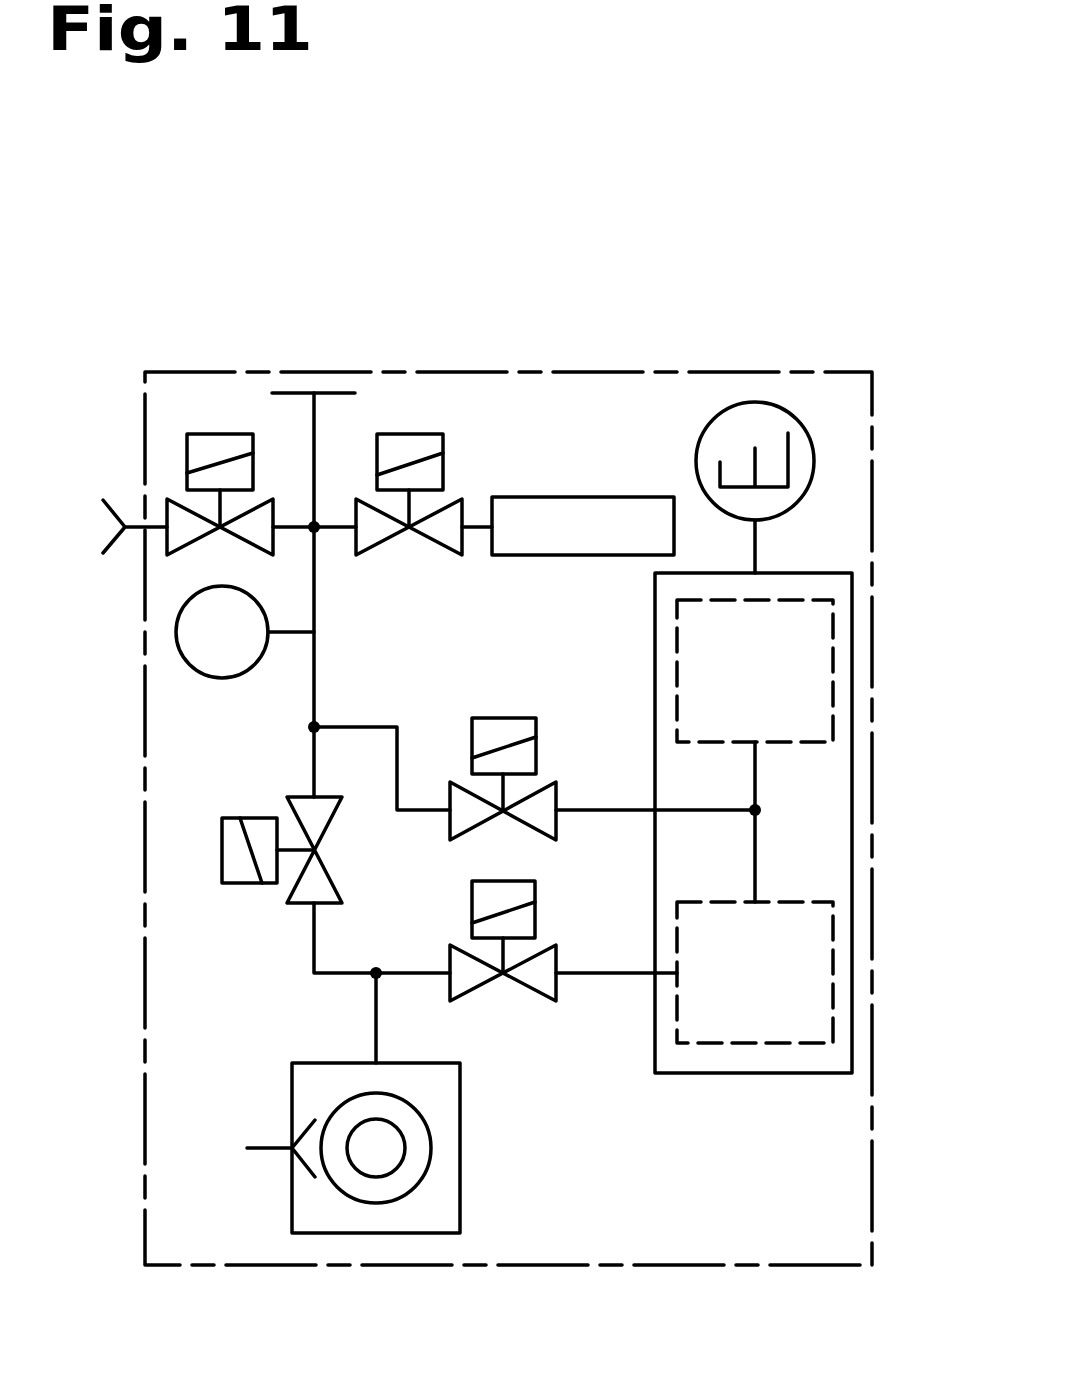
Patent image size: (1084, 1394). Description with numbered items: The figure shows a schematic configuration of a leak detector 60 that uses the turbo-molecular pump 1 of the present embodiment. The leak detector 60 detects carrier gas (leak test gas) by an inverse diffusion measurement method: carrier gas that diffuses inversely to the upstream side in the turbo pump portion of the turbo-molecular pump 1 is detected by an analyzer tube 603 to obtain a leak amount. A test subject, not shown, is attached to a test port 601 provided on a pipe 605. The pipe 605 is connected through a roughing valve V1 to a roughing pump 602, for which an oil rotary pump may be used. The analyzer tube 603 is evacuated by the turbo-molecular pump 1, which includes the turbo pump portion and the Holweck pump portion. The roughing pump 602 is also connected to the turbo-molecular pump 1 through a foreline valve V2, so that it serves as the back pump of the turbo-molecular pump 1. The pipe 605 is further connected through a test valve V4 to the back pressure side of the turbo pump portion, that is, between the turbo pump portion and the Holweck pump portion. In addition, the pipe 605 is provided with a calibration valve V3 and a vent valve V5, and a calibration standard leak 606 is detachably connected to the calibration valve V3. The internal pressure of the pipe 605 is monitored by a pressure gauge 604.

The turbo-molecular pump 1 is at (852, 818).
The leak detector 60 is at (588, 1265).
The test port 601 is at (327, 393).
The roughing pump 602 is at (460, 1148).
The analyzer tube 603 is at (814, 462).
The pressure gauge 604 is at (176, 642).
The pipe 605 is at (317, 670).
The calibration standard leak 606 is at (570, 497).
The roughing valve V1 is at (243, 885).
The foreline valve V2 is at (535, 908).
The calibration valve V3 is at (418, 434).
The test valve V4 is at (502, 718).
The vent valve V5 is at (220, 434).